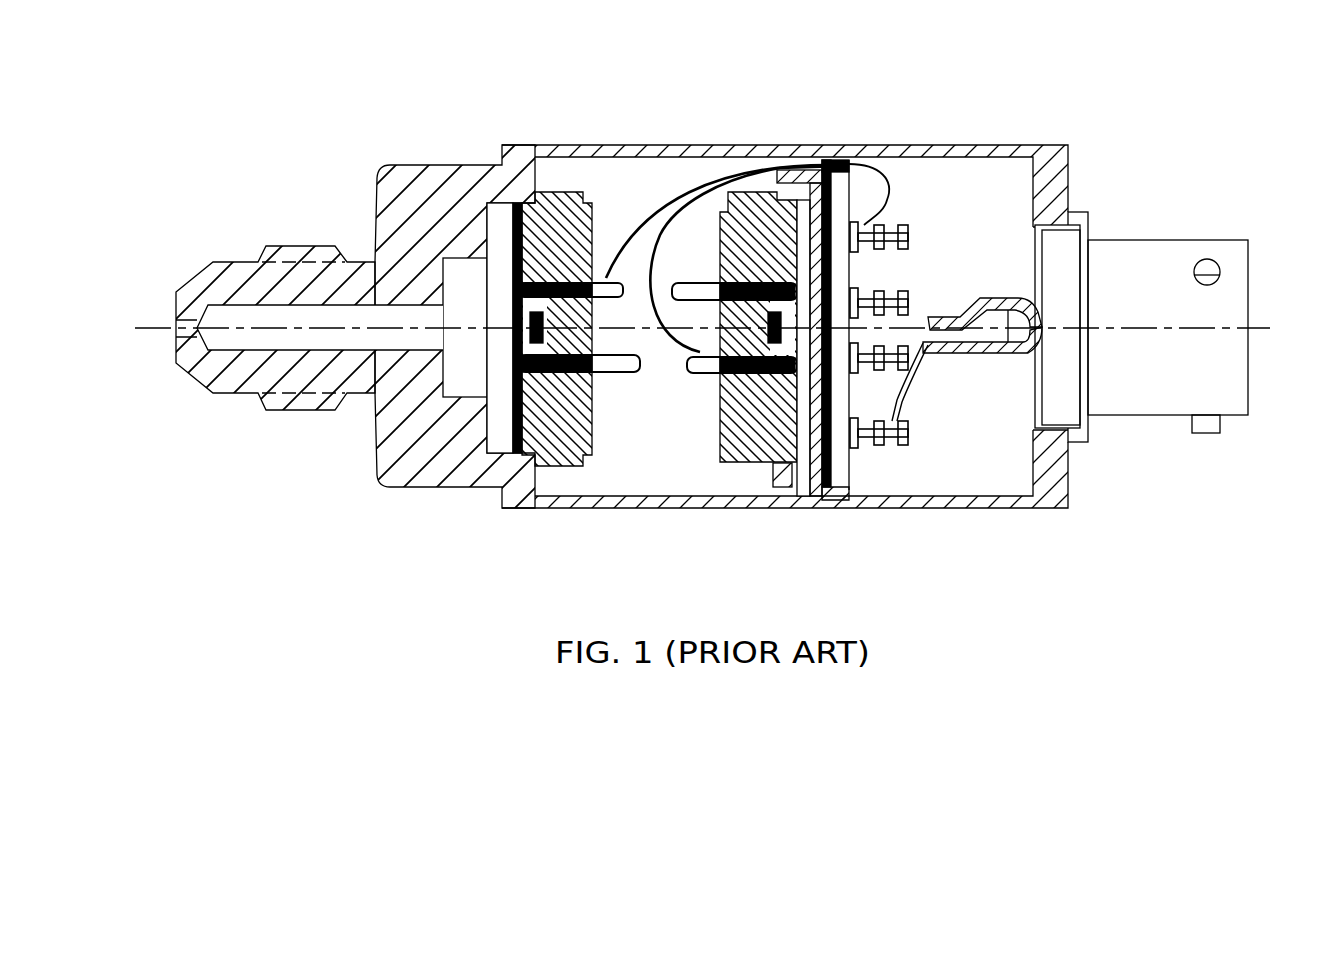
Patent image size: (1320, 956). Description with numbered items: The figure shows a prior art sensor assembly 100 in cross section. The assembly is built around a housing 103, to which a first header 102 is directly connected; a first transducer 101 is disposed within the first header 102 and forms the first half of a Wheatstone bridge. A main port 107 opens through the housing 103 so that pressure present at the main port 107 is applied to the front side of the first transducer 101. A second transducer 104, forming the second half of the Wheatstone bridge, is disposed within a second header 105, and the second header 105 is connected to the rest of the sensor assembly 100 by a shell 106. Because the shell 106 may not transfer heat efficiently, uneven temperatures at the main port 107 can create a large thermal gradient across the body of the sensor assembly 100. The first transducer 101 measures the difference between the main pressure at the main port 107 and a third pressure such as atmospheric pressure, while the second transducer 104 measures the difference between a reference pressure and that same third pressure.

The prior art sensor assembly 100 is at (735, 64).
The first transducer 101 is at (509, 340).
The first header 102 is at (588, 207).
The housing 103 is at (264, 382).
The second transducer 104 is at (797, 341).
The second header 105 is at (724, 428).
The shell 106 is at (666, 500).
The main port 107 is at (305, 316).